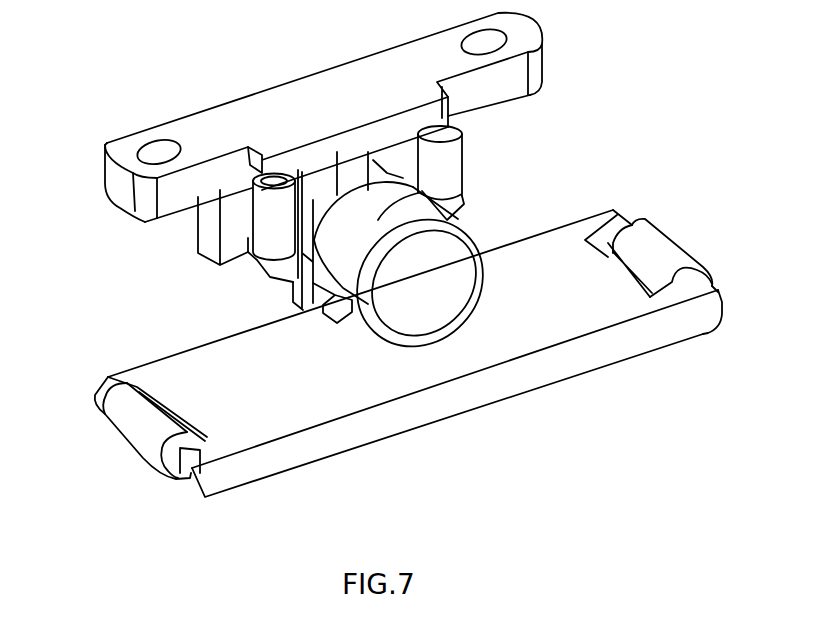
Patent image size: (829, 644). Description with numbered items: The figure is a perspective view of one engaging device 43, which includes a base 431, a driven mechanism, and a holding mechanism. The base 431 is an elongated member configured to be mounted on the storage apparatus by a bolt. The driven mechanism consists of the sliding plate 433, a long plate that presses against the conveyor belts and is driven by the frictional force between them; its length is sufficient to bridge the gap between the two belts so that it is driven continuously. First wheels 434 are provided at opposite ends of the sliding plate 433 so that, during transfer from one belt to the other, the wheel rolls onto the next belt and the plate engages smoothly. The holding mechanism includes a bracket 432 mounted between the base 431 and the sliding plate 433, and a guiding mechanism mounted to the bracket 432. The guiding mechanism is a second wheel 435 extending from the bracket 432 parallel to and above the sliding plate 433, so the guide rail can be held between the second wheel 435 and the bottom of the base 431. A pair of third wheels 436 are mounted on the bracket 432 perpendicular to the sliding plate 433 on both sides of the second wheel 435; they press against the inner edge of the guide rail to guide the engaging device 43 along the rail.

The engaging device 43 is at (552, 418).
The base 431 is at (292, 117).
The bracket 432 is at (233, 218).
The sliding plate 433 is at (305, 390).
The first wheel 434 is at (147, 413).
The second wheel 435 is at (420, 193).
The third wheel 436 is at (453, 165).